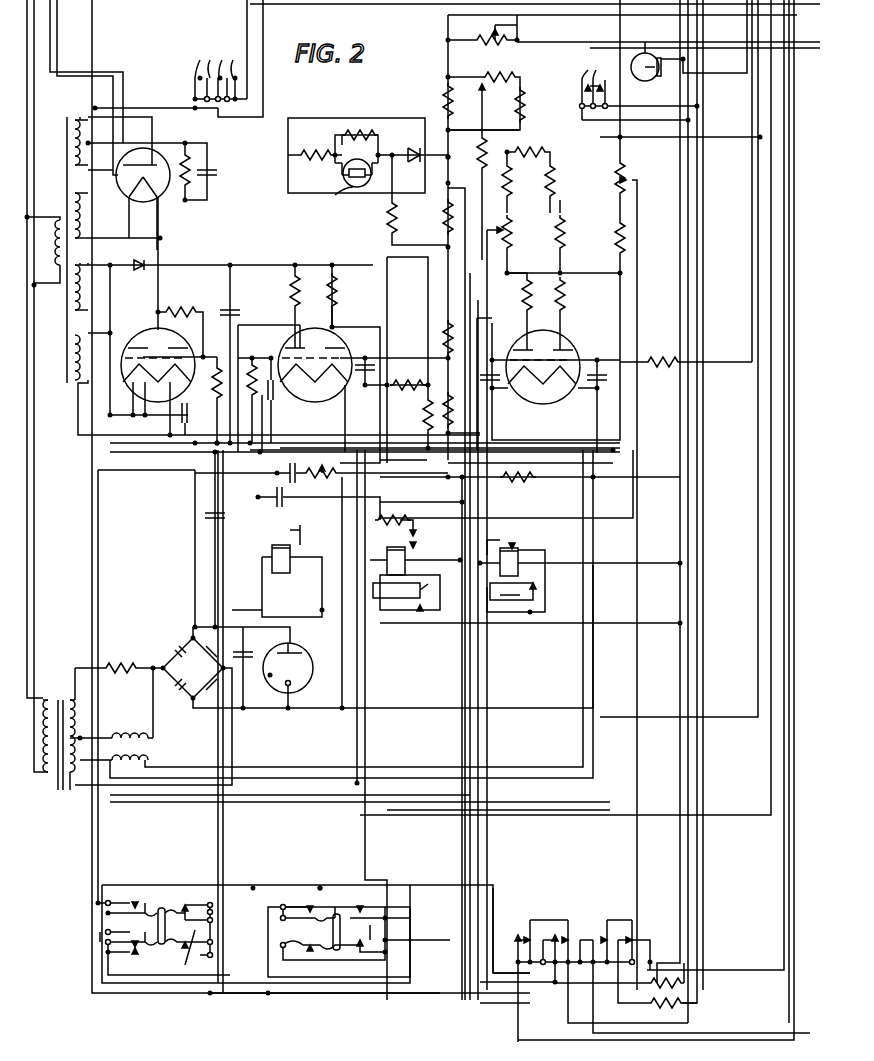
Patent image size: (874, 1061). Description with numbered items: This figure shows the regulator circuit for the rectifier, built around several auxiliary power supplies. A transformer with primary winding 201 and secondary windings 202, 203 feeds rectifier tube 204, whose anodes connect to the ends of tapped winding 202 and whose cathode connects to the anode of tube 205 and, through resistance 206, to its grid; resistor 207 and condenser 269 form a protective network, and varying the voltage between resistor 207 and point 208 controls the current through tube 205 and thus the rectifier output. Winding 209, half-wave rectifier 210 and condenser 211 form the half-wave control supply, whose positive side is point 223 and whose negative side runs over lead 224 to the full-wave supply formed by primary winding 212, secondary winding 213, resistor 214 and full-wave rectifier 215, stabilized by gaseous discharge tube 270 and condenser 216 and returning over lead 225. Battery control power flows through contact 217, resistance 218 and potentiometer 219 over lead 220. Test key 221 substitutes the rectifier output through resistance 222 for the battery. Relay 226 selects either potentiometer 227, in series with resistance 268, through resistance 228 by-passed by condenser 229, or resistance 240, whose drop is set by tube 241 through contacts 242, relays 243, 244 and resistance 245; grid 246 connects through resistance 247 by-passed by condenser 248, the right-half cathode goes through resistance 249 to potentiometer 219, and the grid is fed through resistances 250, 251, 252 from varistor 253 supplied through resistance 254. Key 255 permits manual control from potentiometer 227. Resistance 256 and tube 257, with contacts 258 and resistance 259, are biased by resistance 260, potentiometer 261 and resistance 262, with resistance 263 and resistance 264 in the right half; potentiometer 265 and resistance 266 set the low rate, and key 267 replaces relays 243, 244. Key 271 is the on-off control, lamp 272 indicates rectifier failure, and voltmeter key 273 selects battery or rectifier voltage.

The primary winding 201 is at (68, 287).
The secondary winding 202 is at (94, 108).
The secondary winding 203 is at (74, 191).
The rectifier tube 204 is at (136, 200).
The tube 205 is at (154, 325).
The resistance 206 is at (190, 312).
The resistor 207 is at (188, 204).
The point of tube 205 208 is at (120, 420).
The winding 209 is at (74, 318).
The half-wave rectifier 210 is at (132, 270).
The condenser 211 is at (239, 310).
The primary winding 212 is at (66, 695).
The secondary winding 213 is at (66, 783).
The resistor 214 is at (128, 662).
The full-wave rectifier 215 is at (334, 706).
The condenser 216 is at (262, 650).
The contact 217 is at (600, 918).
The resistance 218 is at (524, 104).
The potentiometer 219 is at (498, 77).
The lead 220 is at (448, 26).
The test key 221 is at (568, 912).
The resistance 222 is at (685, 1007).
The point 223 is at (232, 267).
The lead 224 is at (190, 490).
The lead 225 is at (540, 708).
The relay 226 is at (282, 576).
The potentiometer 227 is at (513, 254).
The resistance 228 is at (228, 355).
The condenser 229 is at (188, 420).
The resistance 240 is at (292, 314).
The tube 241 is at (340, 348).
The contacts 242 is at (140, 951).
The relay 243 is at (520, 530).
The relay 244 is at (384, 548).
The resistance 245 is at (338, 291).
The grid 246 is at (276, 345).
The resistance 247 is at (248, 368).
The condenser 248 is at (260, 409).
The resistance 249 is at (478, 178).
The resistance 250 is at (440, 345).
The resistance 251 is at (395, 212).
The resistance 252 is at (440, 222).
The varistor 253 is at (350, 118).
The resistance 254 is at (420, 414).
The key 255 is at (170, 878).
The resistance 256 is at (519, 298).
The tube 257 is at (568, 358).
The contacts 258 is at (190, 957).
The resistance 259 is at (570, 300).
The resistance 260 is at (573, 250).
The potentiometer 261 is at (559, 186).
The resistance 262 is at (540, 148).
The resistance 263 is at (392, 505).
The resistance 264 is at (658, 375).
The potentiometer 265 is at (628, 176).
The resistance 266 is at (605, 237).
The key 267 is at (335, 948).
The resistance 268 is at (507, 182).
The condenser 269 is at (218, 174).
The gaseous discharge tube 270 is at (278, 685).
The key 271 is at (194, 57).
The rectifier failure lamp 272 is at (644, 53).
The voltmeter key 273 is at (588, 56).